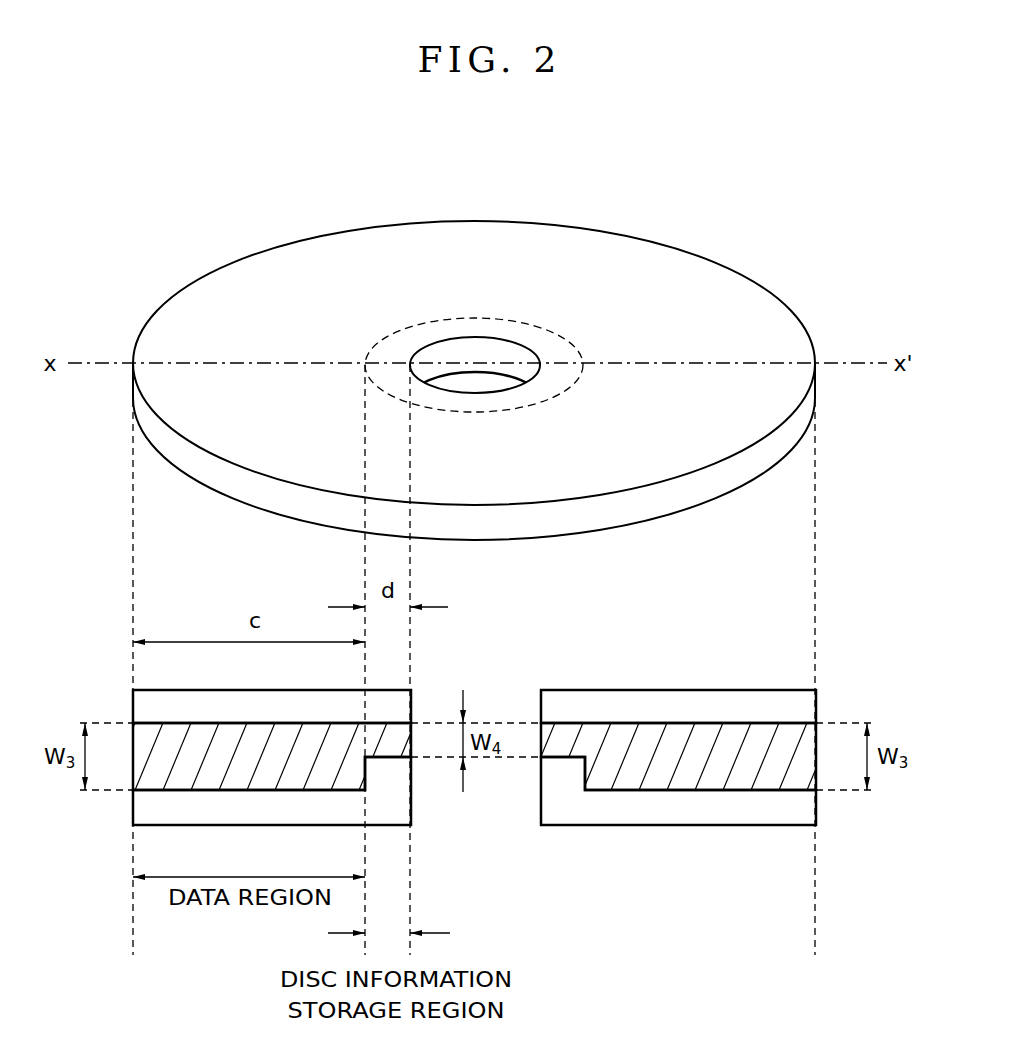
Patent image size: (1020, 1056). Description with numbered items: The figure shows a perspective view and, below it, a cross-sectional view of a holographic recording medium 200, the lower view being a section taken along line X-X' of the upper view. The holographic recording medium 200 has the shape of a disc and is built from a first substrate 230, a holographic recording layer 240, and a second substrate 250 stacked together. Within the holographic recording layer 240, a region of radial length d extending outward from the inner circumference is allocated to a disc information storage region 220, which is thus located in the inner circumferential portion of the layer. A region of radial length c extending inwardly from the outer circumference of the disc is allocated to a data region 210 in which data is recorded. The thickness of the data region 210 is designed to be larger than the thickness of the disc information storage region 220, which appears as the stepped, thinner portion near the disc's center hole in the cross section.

The holographic recording medium 200 is at (496, 342).
The data region 210 is at (752, 300).
The disc information storage region 220 is at (473, 325).
The first substrate 230 is at (147, 703).
The holographic recording layer 240 is at (140, 762).
The second substrate 250 is at (147, 808).